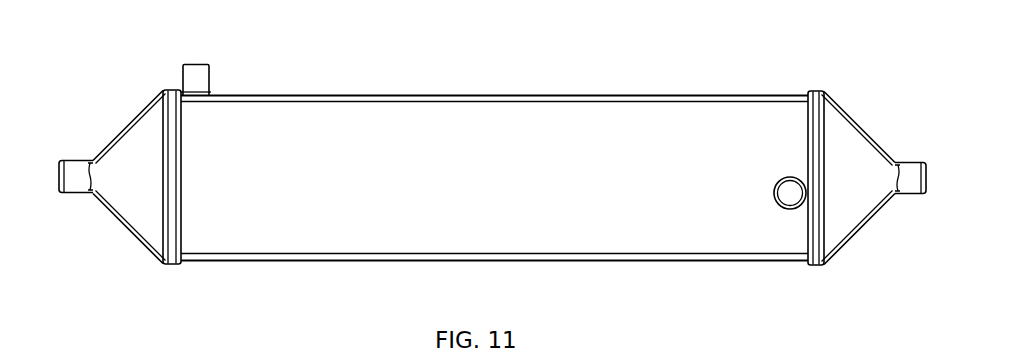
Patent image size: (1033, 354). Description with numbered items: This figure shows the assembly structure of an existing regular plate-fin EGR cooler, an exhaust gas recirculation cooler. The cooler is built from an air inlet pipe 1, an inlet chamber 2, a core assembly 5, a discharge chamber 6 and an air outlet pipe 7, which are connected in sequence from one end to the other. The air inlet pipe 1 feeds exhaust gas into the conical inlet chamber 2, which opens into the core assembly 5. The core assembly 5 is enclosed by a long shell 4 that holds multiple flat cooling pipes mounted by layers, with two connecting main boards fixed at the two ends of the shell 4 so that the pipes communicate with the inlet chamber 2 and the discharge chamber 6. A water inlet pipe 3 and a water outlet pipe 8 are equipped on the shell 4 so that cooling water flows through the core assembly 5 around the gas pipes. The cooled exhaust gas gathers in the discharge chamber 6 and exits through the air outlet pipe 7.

The air inlet pipe 1 is at (75, 177).
The inlet chamber 2 is at (142, 140).
The water inlet pipe 3 is at (200, 80).
The shell 4 is at (318, 96).
The core assembly 5 is at (410, 132).
The discharge chamber 6 is at (842, 127).
The air outlet pipe 7 is at (913, 177).
The water outlet pipe 8 is at (795, 196).